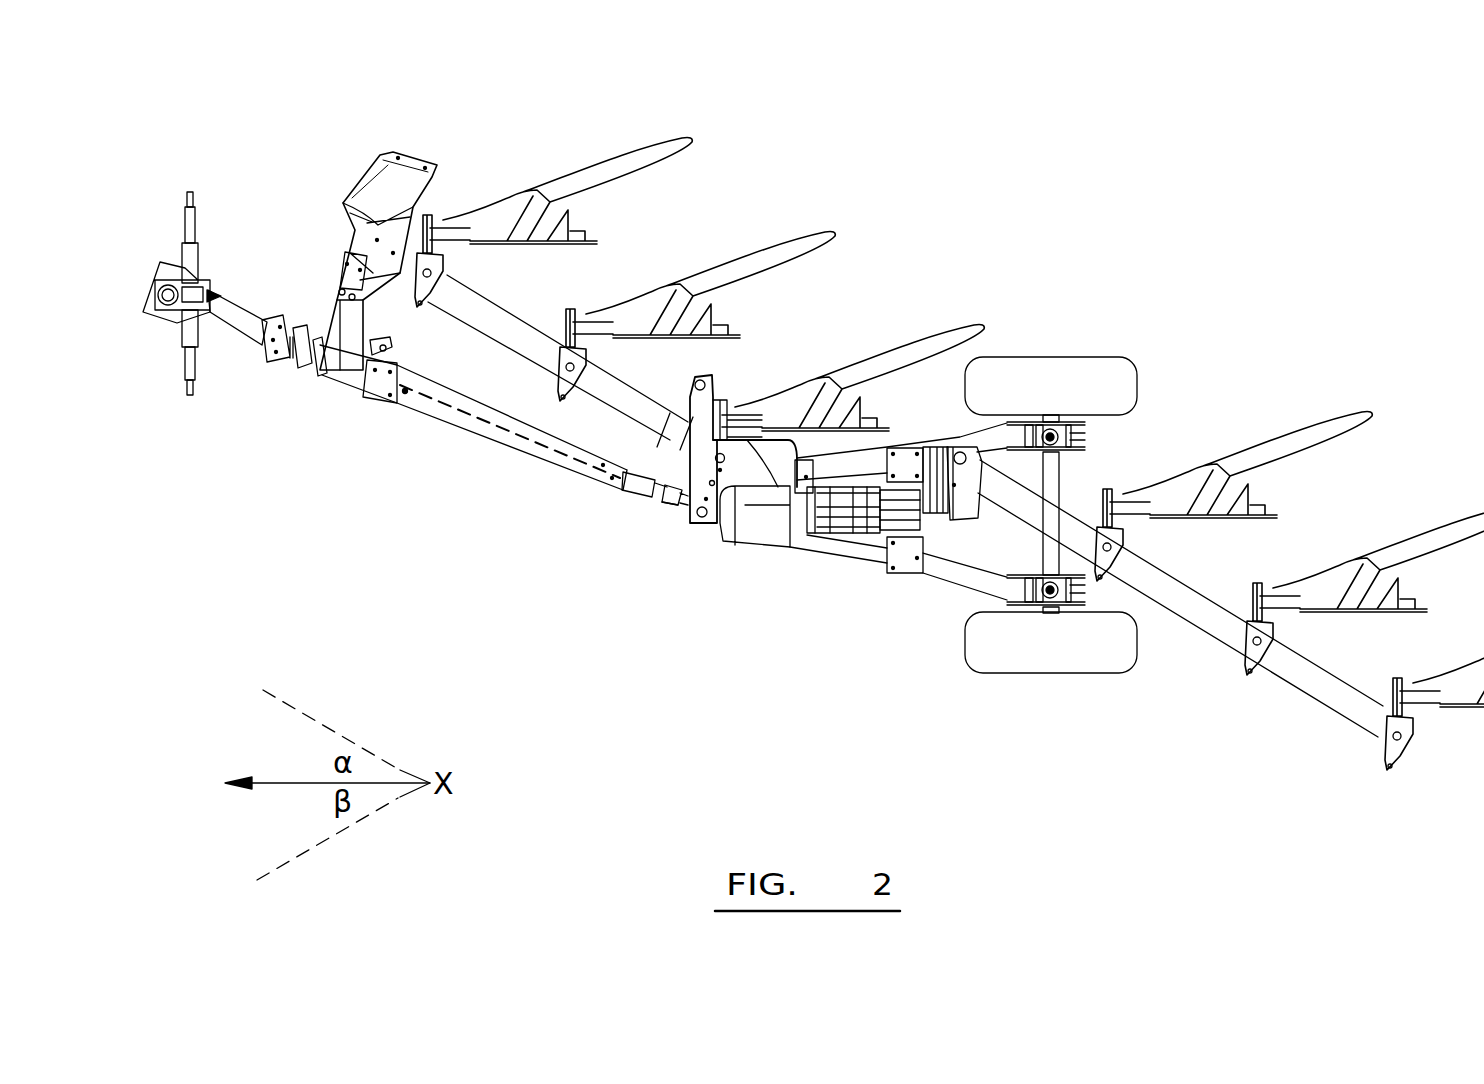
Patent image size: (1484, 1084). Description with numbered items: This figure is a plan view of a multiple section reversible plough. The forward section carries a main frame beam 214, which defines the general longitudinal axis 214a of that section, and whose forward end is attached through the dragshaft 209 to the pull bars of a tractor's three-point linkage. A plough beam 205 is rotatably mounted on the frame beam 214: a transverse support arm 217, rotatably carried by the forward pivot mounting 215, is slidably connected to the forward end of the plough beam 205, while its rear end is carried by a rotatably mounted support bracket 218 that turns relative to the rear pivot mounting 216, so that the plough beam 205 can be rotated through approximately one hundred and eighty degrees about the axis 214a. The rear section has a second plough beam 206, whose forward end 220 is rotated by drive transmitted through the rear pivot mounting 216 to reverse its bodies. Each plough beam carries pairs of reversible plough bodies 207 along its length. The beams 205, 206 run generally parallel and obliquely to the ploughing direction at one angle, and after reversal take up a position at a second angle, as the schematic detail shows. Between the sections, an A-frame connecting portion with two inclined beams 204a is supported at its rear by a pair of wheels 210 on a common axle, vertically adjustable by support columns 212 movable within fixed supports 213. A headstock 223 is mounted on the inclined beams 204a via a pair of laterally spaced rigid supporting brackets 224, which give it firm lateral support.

The inclined beams 204a is at (995, 438).
The plough beam 205 is at (502, 325).
The plough beam 206 is at (1310, 688).
The reversible plough bodies 207 is at (655, 155).
The dragshaft 209 is at (187, 225).
The wheels 210 is at (1060, 372).
The vertically adjustable support columns 212 is at (1133, 435).
The fixed supports 213 is at (1062, 430).
The main frame beam 214 is at (443, 413).
The longitudinal axis 214a is at (547, 450).
The forward pivot mounting 215 is at (347, 380).
The rear pivot mounting 216 is at (668, 526).
The transverse support arm 217 is at (338, 318).
The support bracket 218 is at (707, 403).
The forward end of rear plough beam 220 is at (962, 490).
The headstock 223 is at (913, 562).
The rigid supporting brackets 224 is at (905, 450).